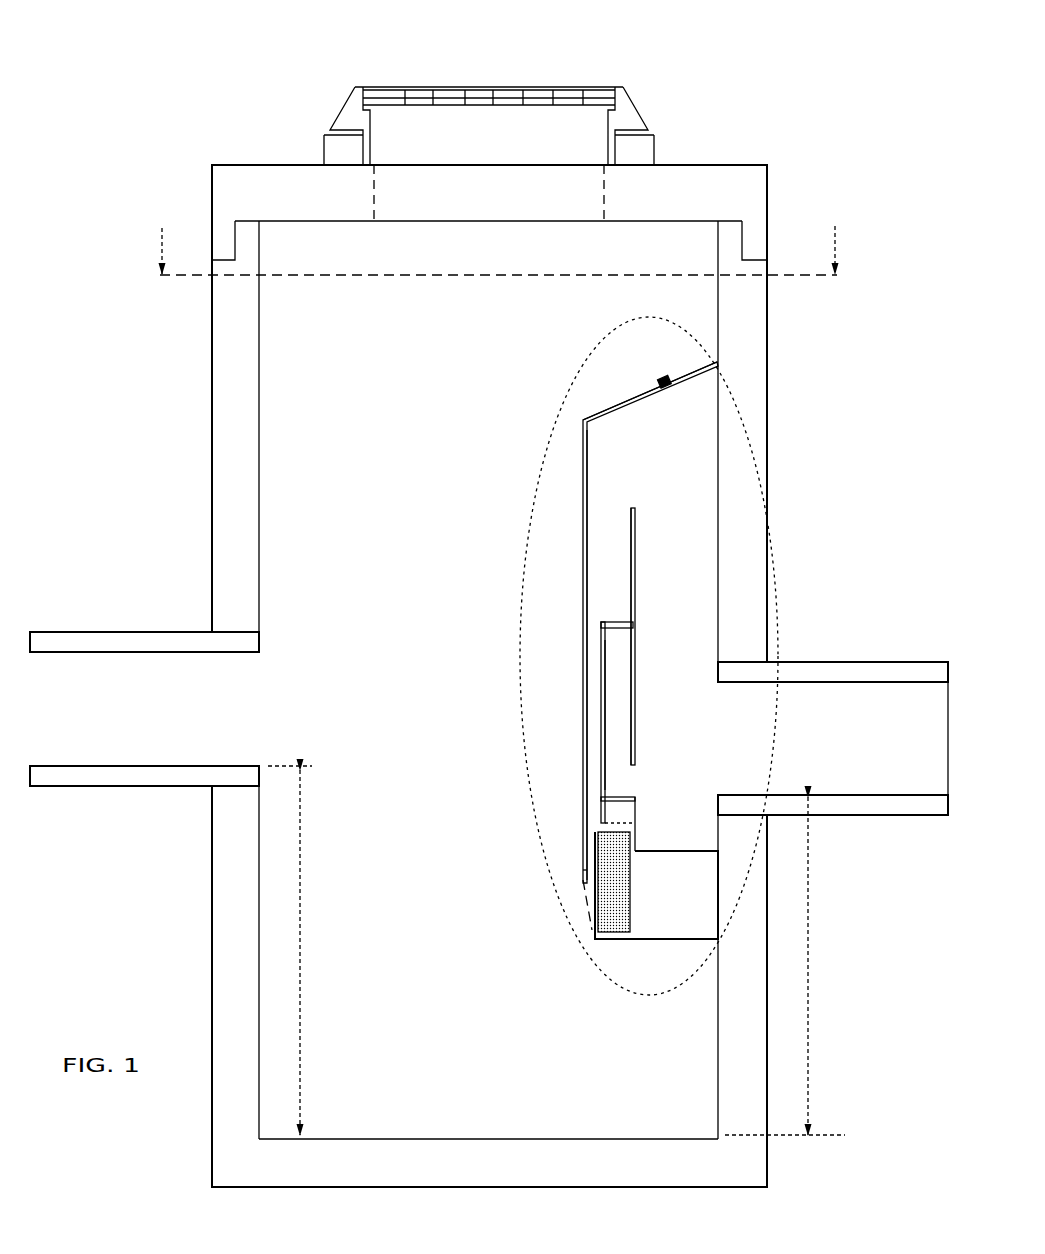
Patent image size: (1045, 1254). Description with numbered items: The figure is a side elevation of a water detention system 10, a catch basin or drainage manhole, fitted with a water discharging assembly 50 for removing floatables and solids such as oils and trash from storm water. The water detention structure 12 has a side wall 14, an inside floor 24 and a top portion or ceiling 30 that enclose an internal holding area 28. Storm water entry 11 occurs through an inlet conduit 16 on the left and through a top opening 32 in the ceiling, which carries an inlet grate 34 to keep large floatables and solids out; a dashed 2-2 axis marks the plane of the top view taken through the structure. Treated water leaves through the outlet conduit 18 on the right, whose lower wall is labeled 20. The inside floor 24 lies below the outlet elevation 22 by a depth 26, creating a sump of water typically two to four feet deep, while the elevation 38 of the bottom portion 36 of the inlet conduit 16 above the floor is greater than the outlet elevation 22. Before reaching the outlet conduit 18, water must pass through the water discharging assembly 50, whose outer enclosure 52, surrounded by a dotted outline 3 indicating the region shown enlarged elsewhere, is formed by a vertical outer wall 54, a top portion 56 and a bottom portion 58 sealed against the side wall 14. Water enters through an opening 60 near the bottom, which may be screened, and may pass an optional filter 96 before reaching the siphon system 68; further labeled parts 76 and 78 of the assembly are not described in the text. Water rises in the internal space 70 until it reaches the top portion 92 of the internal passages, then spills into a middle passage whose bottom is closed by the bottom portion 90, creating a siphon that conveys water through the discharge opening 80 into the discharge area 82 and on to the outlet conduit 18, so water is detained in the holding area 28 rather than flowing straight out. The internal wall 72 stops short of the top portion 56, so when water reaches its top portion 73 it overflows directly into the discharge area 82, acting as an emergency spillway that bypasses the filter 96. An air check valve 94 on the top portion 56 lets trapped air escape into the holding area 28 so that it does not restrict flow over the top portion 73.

The 2-2 axis 2 is at (496, 250).
The detail view region 3 is at (778, 575).
The water detention system 10 is at (178, 160).
The storm water entry 11 is at (441, 185).
The water detention structure 12 is at (215, 335).
The side wall 14 is at (241, 388).
The inlet conduit 16 is at (118, 680).
The outlet conduit 18 is at (868, 715).
The outlet pipe wall 20 is at (918, 800).
The outlet elevation 22 is at (840, 800).
The inside floor 24 is at (462, 1140).
The depth 26 is at (786, 966).
The internal holding area 28 is at (421, 895).
The top portion or ceiling 30 is at (641, 223).
The top opening 32 is at (522, 192).
The inlet grate 34 is at (598, 86).
The bottom portion of the inlet pipe 36 is at (115, 765).
The elevation of inlet pipe bottom 38 is at (290, 950).
The water discharging assembly 50 is at (458, 545).
The outer enclosure 52 is at (503, 617).
The vertical outer wall 54 is at (583, 515).
The top portion 56 is at (630, 400).
The bottom portion 58 is at (645, 942).
The opening 60 is at (587, 911).
The siphon system 68 is at (620, 688).
The internal space 70 is at (615, 576).
The internal wall 72 is at (637, 537).
The top portion of internal wall 73 is at (637, 508).
The sump box 76 is at (680, 855).
The inner plate 78 is at (603, 750).
The discharge opening 80 is at (638, 782).
The discharge area 82 is at (682, 736).
The bottom portion 90 is at (637, 797).
The top portion of internal passages 92 is at (618, 637).
The air check valve 94 is at (663, 378).
The filter 96 is at (603, 930).